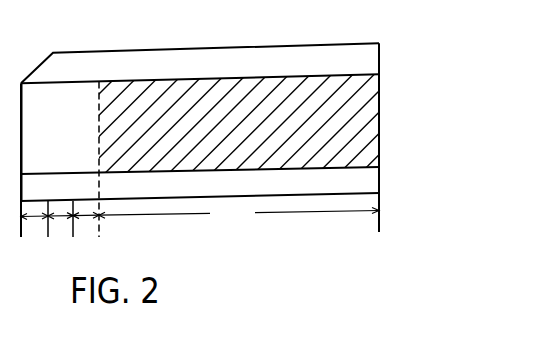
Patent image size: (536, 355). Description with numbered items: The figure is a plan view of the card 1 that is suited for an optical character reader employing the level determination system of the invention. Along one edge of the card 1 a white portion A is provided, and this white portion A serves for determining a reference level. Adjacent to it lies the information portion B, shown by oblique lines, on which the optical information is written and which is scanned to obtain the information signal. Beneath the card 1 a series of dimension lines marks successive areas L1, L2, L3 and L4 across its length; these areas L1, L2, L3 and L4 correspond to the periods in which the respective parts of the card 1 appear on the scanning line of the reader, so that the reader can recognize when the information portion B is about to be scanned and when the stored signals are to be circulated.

The card 1 is at (198, 45).
The white portion A is at (66, 135).
The information portion B is at (268, 118).
The area L1 is at (34, 219).
The area L2 is at (60, 219).
The area L3 is at (86, 224).
The area L4 is at (239, 216).